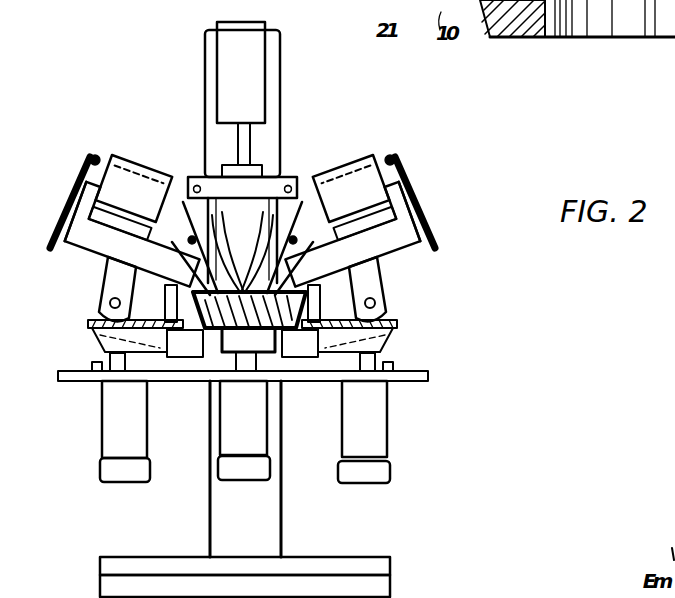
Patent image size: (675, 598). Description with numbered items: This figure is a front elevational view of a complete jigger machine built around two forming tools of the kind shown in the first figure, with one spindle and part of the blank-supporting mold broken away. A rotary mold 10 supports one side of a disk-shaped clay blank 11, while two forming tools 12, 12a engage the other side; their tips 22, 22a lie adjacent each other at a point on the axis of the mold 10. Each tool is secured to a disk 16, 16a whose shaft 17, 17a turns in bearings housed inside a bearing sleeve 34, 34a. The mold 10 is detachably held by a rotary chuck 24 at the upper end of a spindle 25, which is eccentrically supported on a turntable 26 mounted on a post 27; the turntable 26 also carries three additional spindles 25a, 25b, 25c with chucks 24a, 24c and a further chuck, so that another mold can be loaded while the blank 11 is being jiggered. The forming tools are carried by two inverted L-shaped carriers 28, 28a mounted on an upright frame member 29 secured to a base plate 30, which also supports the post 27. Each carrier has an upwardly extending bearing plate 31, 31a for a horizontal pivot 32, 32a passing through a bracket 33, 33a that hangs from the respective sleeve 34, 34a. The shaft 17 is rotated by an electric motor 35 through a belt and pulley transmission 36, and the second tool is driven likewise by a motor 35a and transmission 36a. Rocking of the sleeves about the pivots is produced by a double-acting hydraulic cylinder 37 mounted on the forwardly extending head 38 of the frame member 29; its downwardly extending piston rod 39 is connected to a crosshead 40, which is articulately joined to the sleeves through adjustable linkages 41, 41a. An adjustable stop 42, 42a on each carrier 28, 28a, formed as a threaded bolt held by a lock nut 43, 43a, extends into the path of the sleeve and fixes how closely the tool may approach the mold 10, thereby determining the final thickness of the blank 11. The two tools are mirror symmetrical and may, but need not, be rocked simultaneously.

The rotary mold 10 is at (243, 288).
The blank 11 is at (200, 343).
The rotary forming tool 12 is at (193, 190).
The forming tool 12a is at (292, 190).
The disk 16 is at (150, 232).
The disk 16a is at (335, 232).
The shaft 17 is at (173, 265).
The shaft 17a is at (312, 265).
The tip 22 is at (238, 240).
The tip 22a is at (256, 252).
The rotary chuck 24 is at (222, 412).
The chuck 24a is at (96, 368).
The chuck 24c is at (390, 368).
The spindle 25 is at (262, 400).
The spindle 25a is at (110, 440).
The spindle 25b is at (225, 440).
The spindle 25c is at (380, 430).
The turntable 26 is at (430, 378).
The post 27 is at (228, 500).
The carrier 28 is at (92, 333).
The carrier 28a is at (393, 333).
The frame member 29 is at (284, 515).
The base plate 30 is at (386, 557).
The bearing plate 31 is at (95, 319).
The bearing plate 31a is at (390, 319).
The pivot 32 is at (109, 303).
The pivot 32a is at (376, 303).
The bracket 33 is at (112, 282).
The bracket 33a is at (373, 282).
The bearing sleeve 34 is at (80, 226).
The bearing sleeve 34a is at (405, 226).
The electric motor 35 is at (127, 150).
The electric motor 35a is at (360, 150).
The belt and pulley transmission 36 is at (80, 188).
The belt and pulley transmission 36a is at (405, 185).
The double-acting hydraulic cylinder 37 is at (225, 50).
The head 38 is at (276, 60).
The piston rod 39 is at (238, 135).
The crosshead 40 is at (290, 183).
The adjustable linkage 41 is at (163, 190).
The adjustable linkage 41a is at (322, 190).
The adjustable stop 42 is at (165, 308).
The adjustable stop 42a is at (318, 308).
The lock nut 43 is at (150, 355).
The lock nut 43a is at (318, 355).